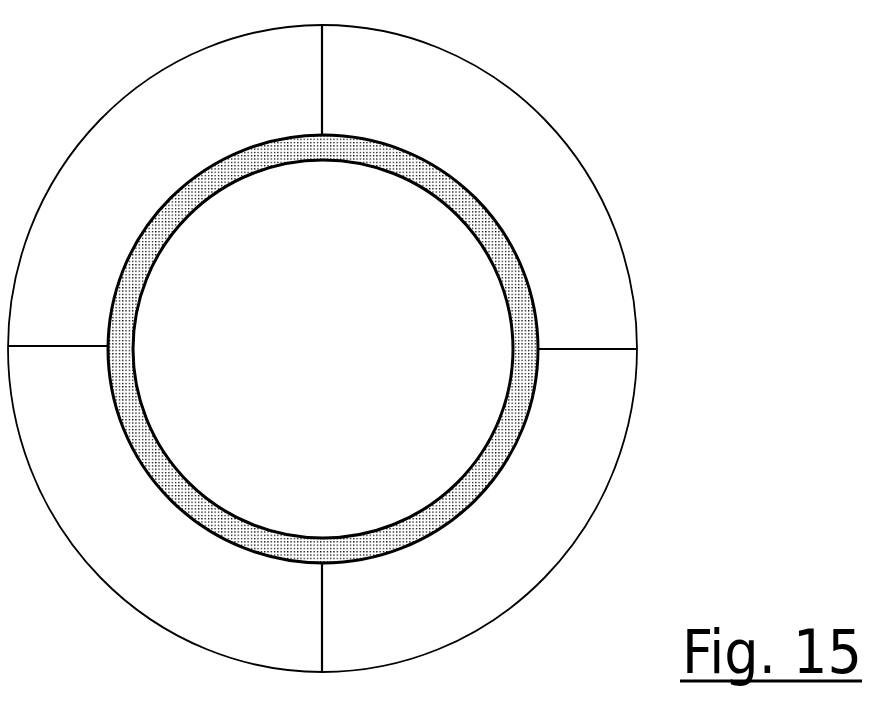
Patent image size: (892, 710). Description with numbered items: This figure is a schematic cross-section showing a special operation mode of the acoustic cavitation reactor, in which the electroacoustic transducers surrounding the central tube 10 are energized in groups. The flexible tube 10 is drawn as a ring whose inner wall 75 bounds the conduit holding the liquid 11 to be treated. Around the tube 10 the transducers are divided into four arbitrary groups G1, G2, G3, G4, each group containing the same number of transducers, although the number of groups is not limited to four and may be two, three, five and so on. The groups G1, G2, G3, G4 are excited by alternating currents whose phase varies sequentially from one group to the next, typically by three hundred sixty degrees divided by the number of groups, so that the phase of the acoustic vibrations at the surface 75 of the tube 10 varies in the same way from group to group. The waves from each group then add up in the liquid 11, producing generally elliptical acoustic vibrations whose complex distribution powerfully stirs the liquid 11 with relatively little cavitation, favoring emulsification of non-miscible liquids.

The tube 10 is at (488, 283).
The liquid 11 is at (335, 403).
The inner wall 75 is at (133, 317).
The group of transducers G1 is at (165, 190).
The group of transducers G2 is at (182, 567).
The group of transducers G3 is at (558, 558).
The group of transducers G4 is at (558, 198).